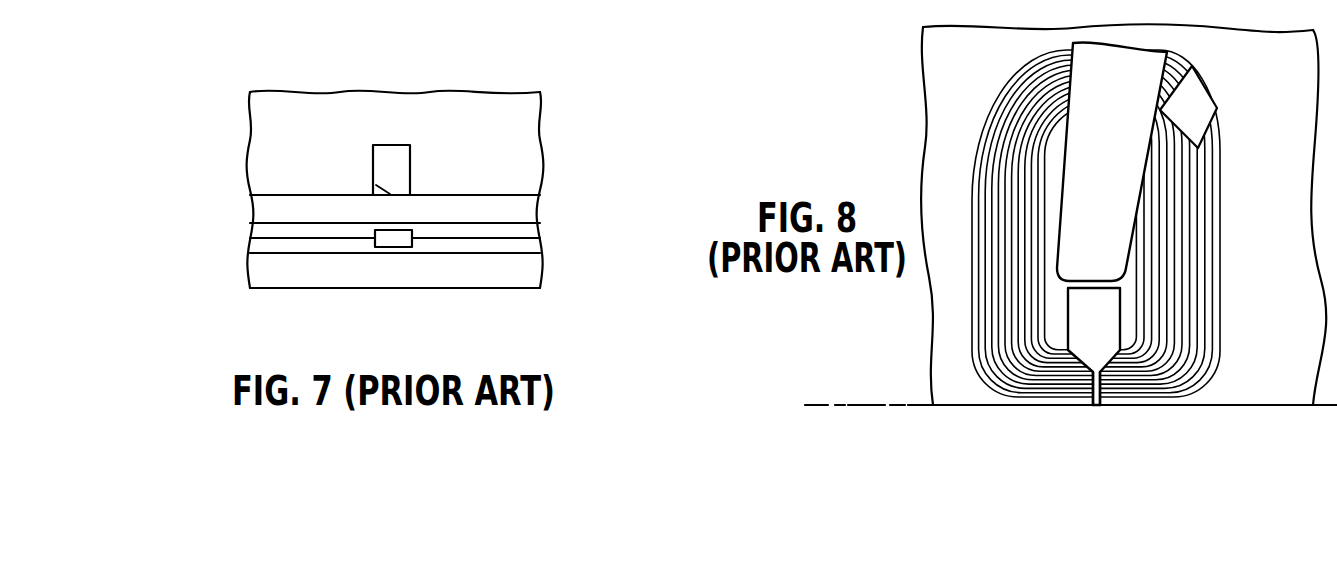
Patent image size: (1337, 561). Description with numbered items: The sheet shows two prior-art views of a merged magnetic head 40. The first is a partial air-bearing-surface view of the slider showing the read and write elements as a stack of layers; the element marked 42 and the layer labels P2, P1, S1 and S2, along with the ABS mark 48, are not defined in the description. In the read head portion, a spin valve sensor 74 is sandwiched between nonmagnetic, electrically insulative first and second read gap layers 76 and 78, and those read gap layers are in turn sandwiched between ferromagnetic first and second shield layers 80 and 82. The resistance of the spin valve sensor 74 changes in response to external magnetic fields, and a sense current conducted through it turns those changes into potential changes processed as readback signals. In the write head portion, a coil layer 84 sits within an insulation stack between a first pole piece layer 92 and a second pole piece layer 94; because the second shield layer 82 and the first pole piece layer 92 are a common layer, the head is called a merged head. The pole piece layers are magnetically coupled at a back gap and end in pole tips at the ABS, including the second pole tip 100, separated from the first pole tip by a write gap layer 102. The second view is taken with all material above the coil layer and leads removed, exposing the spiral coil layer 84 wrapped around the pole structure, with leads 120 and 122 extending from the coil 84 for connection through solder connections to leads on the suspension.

In FIG. 7, the merged magnetic head 40 is at (568, 104).
In FIG. 8, the merged magnetic head 40 is at (1228, 197).
In FIG. 7, the second pole piece layer 42 is at (262, 113).
In FIG. 7, the spin valve sensor 74 is at (393, 240).
In FIG. 7, the first read gap layer 76 is at (287, 254).
In FIG. 7, the second read gap layer 78 is at (509, 228).
In FIG. 7, the first shield layer 80 is at (431, 272).
In FIG. 7, the second shield layer 82 is at (341, 211).
In FIG. 7, the first pole piece layer 92 is at (341, 211).
In FIG. 8, the coil layer 84 is at (1200, 292).
In FIG. 8, the second pole piece layer 94 is at (1110, 335).
In FIG. 7, the second pole tip 100 is at (426, 116).
In FIG. 8, the second pole tip 100 is at (1098, 406).
In FIG. 7, the write gap layer 102 is at (388, 192).
In FIG. 8, the lead 120 is at (1120, 163).
In FIG. 8, the lead 122 is at (1198, 85).
In FIG. 8, the air bearing surface 48 is at (866, 404).
In FIG. 7, the second pole piece P2 is at (393, 148).
In FIG. 7, the first pole piece P1 is at (262, 208).
In FIG. 7, the first shield S1 is at (530, 270).
In FIG. 7, the second shield S2 is at (341, 211).